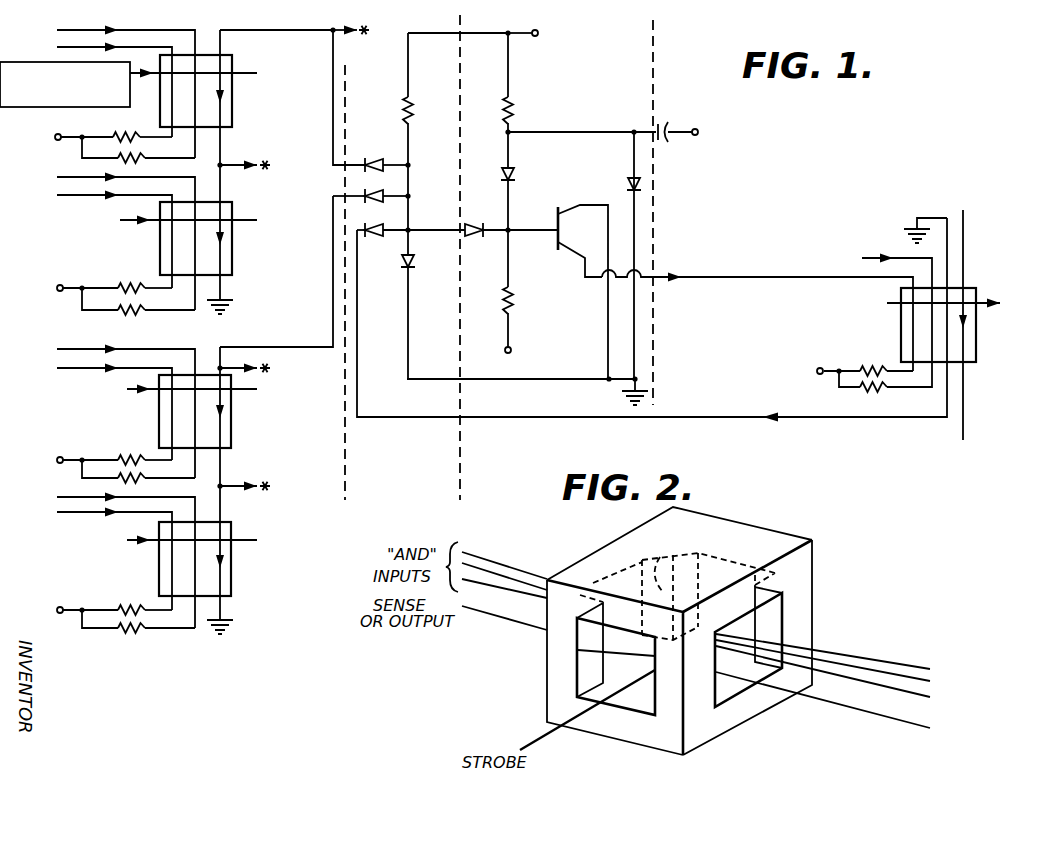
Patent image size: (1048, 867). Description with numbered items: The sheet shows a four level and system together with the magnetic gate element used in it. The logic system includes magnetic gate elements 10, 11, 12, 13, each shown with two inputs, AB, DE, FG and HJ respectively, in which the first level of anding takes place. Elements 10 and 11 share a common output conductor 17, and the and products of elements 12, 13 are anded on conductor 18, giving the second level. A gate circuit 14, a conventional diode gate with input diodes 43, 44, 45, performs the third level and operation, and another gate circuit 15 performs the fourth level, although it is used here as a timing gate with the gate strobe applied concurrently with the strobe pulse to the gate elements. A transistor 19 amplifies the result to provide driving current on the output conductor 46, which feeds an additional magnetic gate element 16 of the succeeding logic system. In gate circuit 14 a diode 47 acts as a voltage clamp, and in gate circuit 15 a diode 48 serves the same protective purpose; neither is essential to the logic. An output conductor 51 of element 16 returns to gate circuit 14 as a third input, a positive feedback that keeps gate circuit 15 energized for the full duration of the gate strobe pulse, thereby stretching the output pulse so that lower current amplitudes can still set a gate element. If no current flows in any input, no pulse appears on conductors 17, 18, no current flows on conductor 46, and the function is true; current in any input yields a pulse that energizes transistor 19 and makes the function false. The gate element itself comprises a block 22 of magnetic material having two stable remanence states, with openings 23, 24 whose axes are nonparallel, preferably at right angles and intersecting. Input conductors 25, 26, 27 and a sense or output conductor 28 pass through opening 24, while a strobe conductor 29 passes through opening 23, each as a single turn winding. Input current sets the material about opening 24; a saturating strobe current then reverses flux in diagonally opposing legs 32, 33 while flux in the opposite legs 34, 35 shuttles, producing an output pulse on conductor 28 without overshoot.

In FIG. 1, the magnetic gate element 10 is at (225, 111).
In FIG. 1, the magnetic gate element 11 is at (225, 263).
In FIG. 1, the magnetic gate element 12 is at (225, 433).
In FIG. 1, the magnetic gate element 13 is at (225, 585).
In FIG. 1, the gate circuit 14 is at (420, 204).
In FIG. 1, the gate circuit 15 is at (613, 214).
In FIG. 1, the magnetic gate element 16 is at (968, 339).
In FIG. 1, the output conductor 17 is at (233, 29).
In FIG. 1, the output conductor 18 is at (232, 347).
In FIG. 1, the transistor 19 is at (569, 211).
In FIG. 1, the input diode 43 is at (383, 133).
In FIG. 1, the input diode 44 is at (383, 194).
In FIG. 1, the input diode 45 is at (380, 238).
In FIG. 1, the output conductor 46 is at (656, 277).
In FIG. 1, the diode 47 is at (411, 260).
In FIG. 1, the diode 48 is at (625, 184).
In FIG. 1, the output conductor 51 is at (947, 397).
In FIG. 2, the block 22 is at (685, 630).
In FIG. 2, the opening 23 is at (600, 688).
In FIG. 2, the opening 24 is at (723, 688).
In FIG. 2, the input conductor 25 is at (468, 553).
In FIG. 2, the input conductor 26 is at (502, 576).
In FIG. 2, the input conductor 27 is at (523, 594).
In FIG. 2, the sense or output conductor 28 is at (520, 626).
In FIG. 2, the strobe conductor 29 is at (540, 737).
In FIG. 2, the leg 32 is at (587, 648).
In FIG. 2, the leg 33 is at (795, 607).
In FIG. 2, the leg 34 is at (670, 697).
In FIG. 2, the leg 35 is at (660, 572).